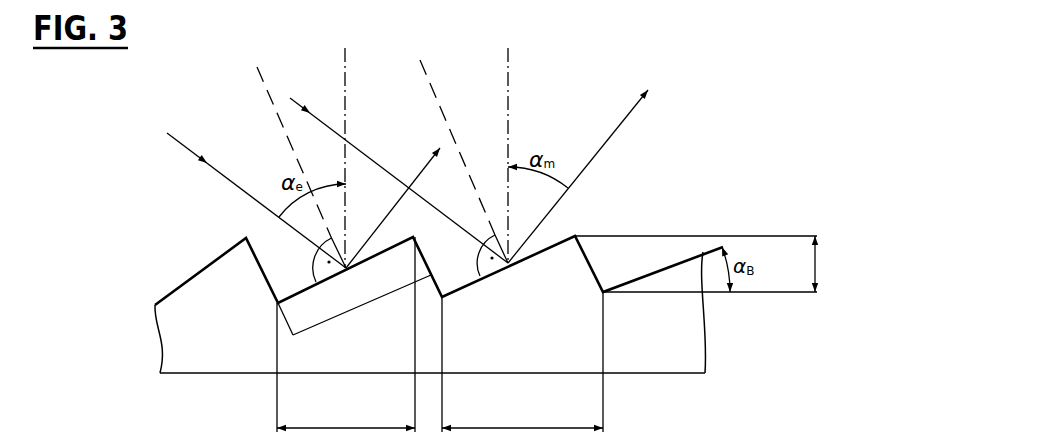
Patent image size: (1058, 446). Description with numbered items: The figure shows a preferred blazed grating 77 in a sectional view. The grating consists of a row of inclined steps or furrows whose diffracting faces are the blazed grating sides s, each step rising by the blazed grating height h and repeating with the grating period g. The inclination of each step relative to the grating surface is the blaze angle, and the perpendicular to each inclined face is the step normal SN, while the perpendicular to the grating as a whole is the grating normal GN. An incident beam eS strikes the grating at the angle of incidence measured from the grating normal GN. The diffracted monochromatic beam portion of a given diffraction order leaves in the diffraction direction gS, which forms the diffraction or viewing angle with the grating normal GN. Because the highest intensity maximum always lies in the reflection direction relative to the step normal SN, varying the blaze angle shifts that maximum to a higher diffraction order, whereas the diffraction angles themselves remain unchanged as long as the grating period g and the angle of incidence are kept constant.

The blazed grating 77 is at (683, 173).
The grating normal GN is at (427, 145).
The step normal SN is at (369, 153).
The incident beam eS is at (322, 171).
The diffraction direction gS is at (507, 164).
The blazed grating side s is at (354, 305).
The grating period g is at (440, 334).
The blazed grating height h is at (807, 264).